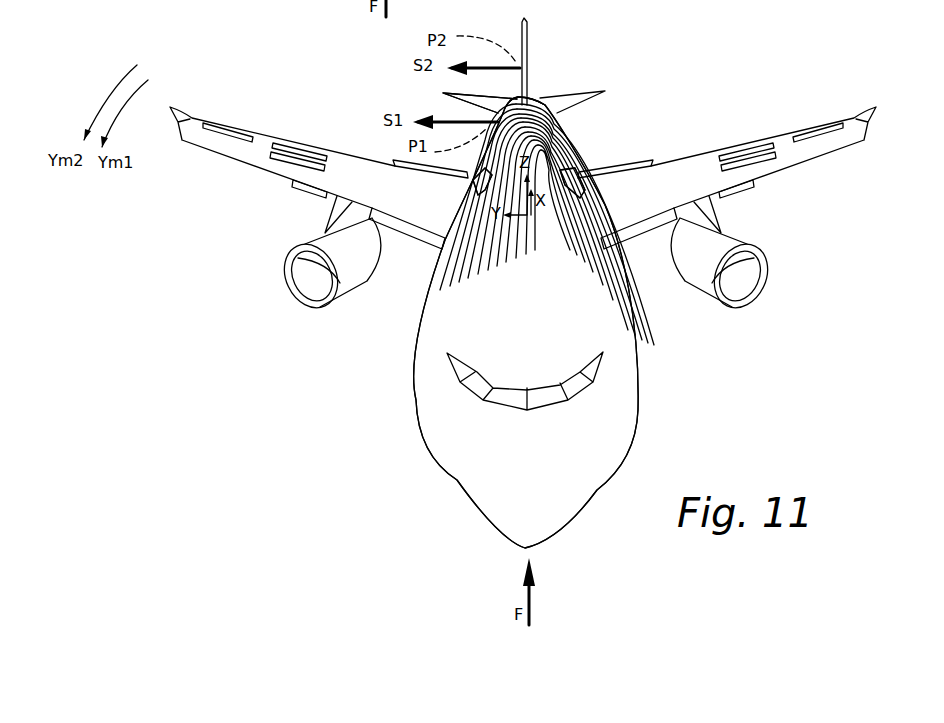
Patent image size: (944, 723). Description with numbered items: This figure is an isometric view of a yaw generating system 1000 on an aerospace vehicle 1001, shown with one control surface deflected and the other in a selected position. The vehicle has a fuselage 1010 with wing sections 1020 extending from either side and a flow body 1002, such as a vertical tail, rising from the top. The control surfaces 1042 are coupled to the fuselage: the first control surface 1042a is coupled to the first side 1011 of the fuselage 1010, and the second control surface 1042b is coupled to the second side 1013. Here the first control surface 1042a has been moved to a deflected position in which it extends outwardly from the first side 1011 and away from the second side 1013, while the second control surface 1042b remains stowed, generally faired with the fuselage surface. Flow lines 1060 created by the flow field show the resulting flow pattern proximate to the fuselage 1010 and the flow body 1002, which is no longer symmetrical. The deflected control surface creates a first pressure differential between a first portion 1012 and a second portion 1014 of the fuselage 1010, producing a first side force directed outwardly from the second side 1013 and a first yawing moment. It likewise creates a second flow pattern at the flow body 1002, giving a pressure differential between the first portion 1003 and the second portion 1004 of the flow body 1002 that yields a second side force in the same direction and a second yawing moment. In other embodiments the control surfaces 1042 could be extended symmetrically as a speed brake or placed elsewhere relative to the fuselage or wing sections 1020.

The yaw generating system 1000 is at (352, 489).
The aerospace vehicle 1001 is at (636, 443).
The flow body 1002 is at (524, 26).
The first portion of the flow body 1003 is at (520, 76).
The second portion of the flow body 1004 is at (530, 92).
The fuselage 1010 is at (418, 362).
The first side of the fuselage 1011 is at (617, 270).
The first portion of the fuselage 1012 is at (543, 112).
The second side of the fuselage 1013 is at (440, 268).
The second portion of the fuselage 1014 is at (443, 93).
The wing sections 1020 is at (348, 183).
The control surfaces 1042 is at (312, 339).
The first control surface 1042a is at (580, 210).
The second control surface 1042b is at (470, 213).
The flow lines 1060 is at (530, 140).